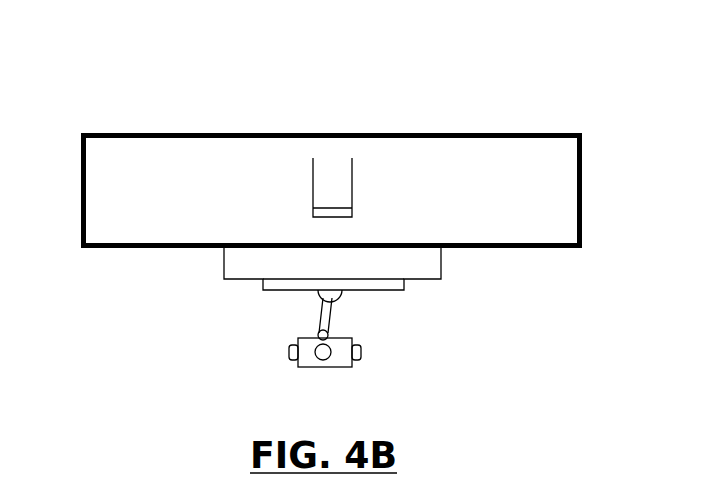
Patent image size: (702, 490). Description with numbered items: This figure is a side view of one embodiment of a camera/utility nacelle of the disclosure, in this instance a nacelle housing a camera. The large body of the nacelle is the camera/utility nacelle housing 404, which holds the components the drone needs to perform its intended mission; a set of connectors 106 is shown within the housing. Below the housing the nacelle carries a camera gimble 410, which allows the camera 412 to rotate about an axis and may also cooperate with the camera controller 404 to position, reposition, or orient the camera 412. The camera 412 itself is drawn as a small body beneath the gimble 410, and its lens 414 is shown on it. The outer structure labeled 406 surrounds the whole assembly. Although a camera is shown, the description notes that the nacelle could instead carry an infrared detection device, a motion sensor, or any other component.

The connectors 106 is at (328, 168).
The camera/utility nacelle housing 404 is at (223, 265).
The housing 406 is at (507, 133).
The camera gimble 410 is at (328, 297).
The camera 412 is at (307, 354).
The lens 414 is at (319, 360).